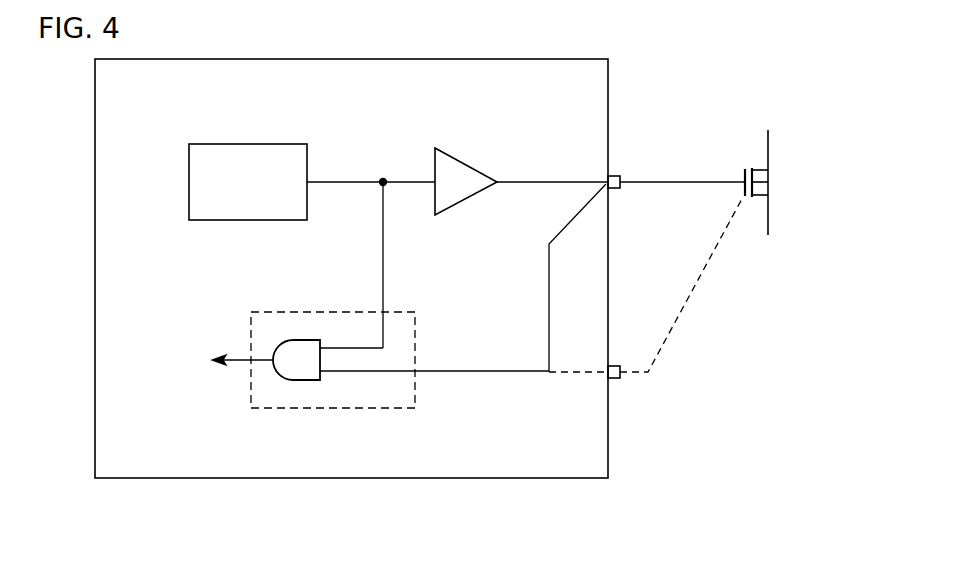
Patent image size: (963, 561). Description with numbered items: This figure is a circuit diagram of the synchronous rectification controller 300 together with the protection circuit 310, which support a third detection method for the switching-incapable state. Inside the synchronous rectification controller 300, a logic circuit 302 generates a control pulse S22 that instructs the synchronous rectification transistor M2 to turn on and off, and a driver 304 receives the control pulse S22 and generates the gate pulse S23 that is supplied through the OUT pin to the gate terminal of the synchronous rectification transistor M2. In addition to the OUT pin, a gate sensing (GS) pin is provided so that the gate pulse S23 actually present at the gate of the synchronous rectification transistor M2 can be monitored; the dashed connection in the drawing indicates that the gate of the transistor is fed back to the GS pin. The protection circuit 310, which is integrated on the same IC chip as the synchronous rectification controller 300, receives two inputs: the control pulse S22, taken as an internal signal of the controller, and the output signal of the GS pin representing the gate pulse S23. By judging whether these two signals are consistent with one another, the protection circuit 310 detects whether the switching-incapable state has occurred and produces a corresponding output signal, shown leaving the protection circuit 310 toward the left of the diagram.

The synchronous rectification controller 300 is at (413, 478).
The logic circuit 302 is at (243, 143).
The driver 304 is at (467, 165).
The protection circuit 310 is at (320, 408).
The synchronous rectification transistor M2 is at (780, 180).
The OUT pin OUT is at (621, 175).
The gate sensing pin GS is at (621, 365).
The control pulse S22 is at (382, 166).
The gate pulse S23 is at (709, 171).